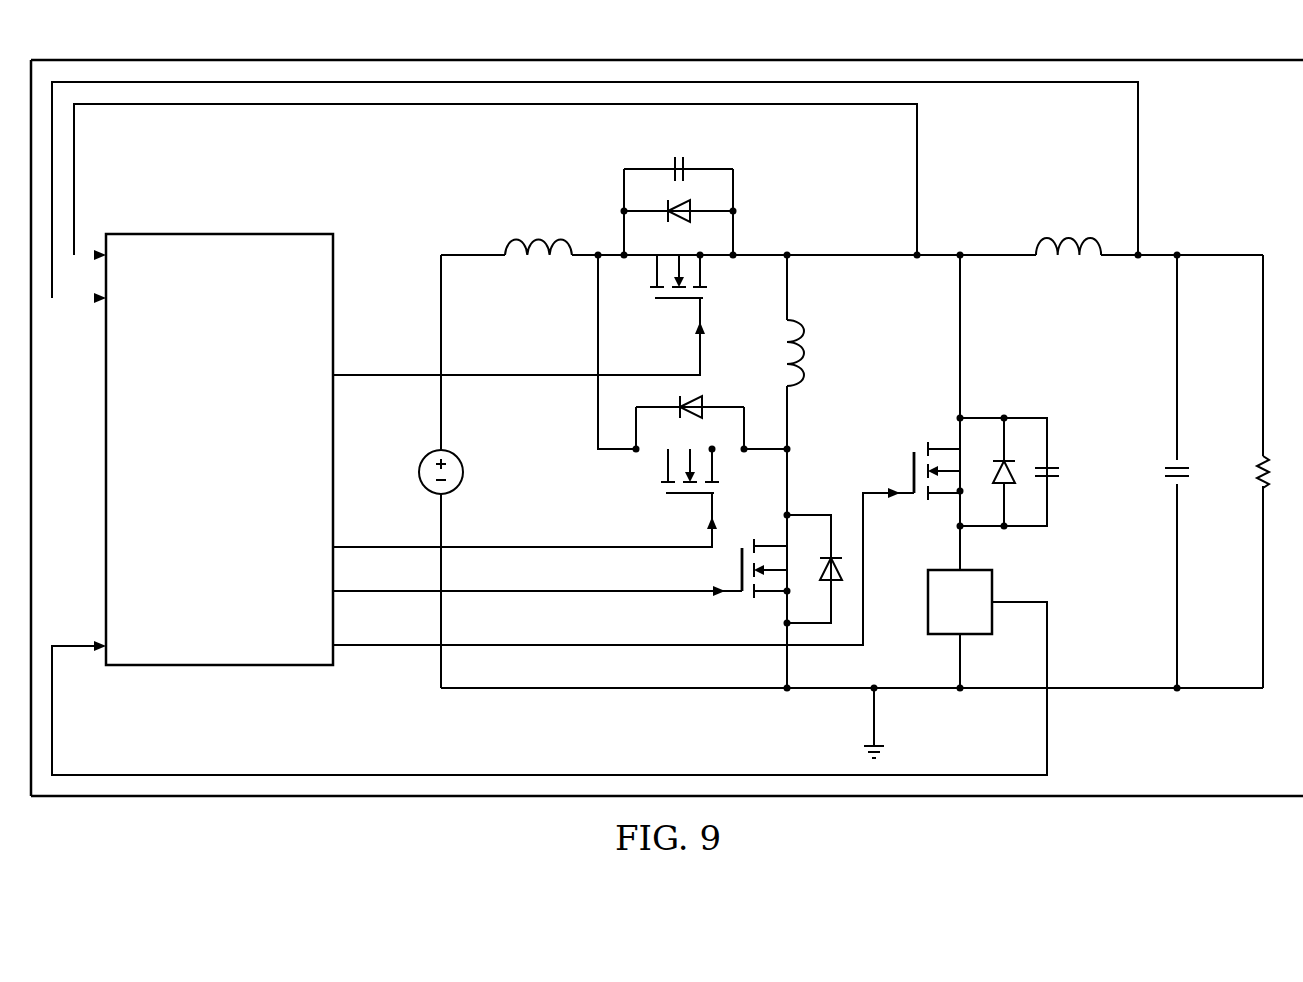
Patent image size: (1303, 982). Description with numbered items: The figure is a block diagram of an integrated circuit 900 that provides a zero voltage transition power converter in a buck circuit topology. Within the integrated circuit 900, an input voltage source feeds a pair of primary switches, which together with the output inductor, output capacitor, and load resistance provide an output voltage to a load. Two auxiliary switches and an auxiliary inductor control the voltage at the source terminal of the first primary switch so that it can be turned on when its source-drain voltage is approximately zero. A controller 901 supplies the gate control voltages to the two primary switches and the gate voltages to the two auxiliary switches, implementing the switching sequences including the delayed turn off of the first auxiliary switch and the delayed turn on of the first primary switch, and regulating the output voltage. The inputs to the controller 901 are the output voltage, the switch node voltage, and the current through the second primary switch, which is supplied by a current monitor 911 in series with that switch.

The integrated circuit 900 is at (172, 58).
The controller 901 is at (172, 230).
The current monitor 911 is at (995, 580).